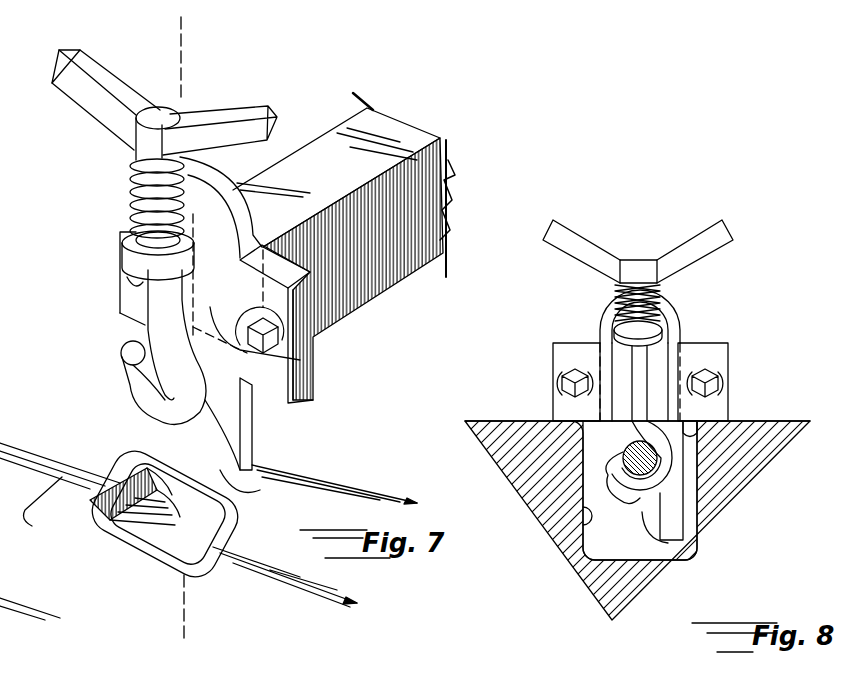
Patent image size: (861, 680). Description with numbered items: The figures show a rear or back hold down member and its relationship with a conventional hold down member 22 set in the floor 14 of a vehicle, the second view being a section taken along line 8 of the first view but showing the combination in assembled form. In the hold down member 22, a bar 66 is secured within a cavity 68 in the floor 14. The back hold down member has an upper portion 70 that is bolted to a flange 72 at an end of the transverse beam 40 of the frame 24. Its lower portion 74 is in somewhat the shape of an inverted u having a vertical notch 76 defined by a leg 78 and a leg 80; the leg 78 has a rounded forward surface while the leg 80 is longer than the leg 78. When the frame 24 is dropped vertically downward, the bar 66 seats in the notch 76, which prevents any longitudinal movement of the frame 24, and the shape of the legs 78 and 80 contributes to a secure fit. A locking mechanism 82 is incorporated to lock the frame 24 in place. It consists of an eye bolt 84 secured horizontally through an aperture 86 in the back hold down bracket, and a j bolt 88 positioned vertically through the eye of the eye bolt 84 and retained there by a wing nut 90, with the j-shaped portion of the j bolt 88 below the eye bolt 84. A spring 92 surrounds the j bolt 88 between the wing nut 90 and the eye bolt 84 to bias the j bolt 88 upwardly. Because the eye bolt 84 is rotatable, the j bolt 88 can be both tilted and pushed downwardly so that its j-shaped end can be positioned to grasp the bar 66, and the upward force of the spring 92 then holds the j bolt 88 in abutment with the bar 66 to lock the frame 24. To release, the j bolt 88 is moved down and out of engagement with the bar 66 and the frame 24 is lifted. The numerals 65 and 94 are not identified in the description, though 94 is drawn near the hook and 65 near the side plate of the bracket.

In FIG. 7, the section line 8— 8 is at (177, 33).
In FIG. 7, the floor 14 is at (178, 531).
In FIG. 8, the floor 14 is at (503, 420).
In FIG. 7, the hold down member 22 is at (102, 536).
In FIG. 8, the hold down member 22 is at (685, 412).
In FIG. 7, the frame 24 is at (397, 104).
In FIG. 7, the transverse beam 40 is at (408, 128).
In FIG. 8, the transverse beam 40 is at (681, 330).
In FIG. 7, the side plate 65 is at (300, 340).
In FIG. 8, the side plate 65 is at (688, 372).
In FIG. 7, the bar 66 is at (130, 522).
In FIG. 8, the bar 66 is at (607, 468).
In FIG. 7, the cavity 68 is at (162, 542).
In FIG. 8, the cavity 68 is at (583, 527).
In FIG. 7, the upper portion 70 is at (290, 389).
In FIG. 8, the upper portion 70 is at (560, 373).
In FIG. 7, the flange 72 is at (308, 362).
In FIG. 8, the flange 72 is at (560, 353).
In FIG. 7, the lower portion 74 is at (240, 423).
In FIG. 8, the lower portion 74 is at (682, 512).
In FIG. 7, the vertical notch 76 is at (268, 465).
In FIG. 8, the vertical notch 76 is at (680, 540).
In FIG. 8, the leg 78 is at (600, 448).
In FIG. 7, the leg 80 is at (238, 472).
In FIG. 8, the leg 80 is at (680, 482).
In FIG. 7, the locking mechanism 82 is at (135, 324).
In FIG. 8, the locking mechanism 82 is at (602, 318).
In FIG. 7, the eye bolt 84 is at (128, 262).
In FIG. 8, the eye bolt 84 is at (665, 325).
In FIG. 7, the aperture 86 is at (127, 247).
In FIG. 7, the j bolt 88 is at (122, 366).
In FIG. 8, the j bolt 88 is at (678, 457).
In FIG. 7, the wing nut 90 is at (127, 128).
In FIG. 8, the wing nut 90 is at (600, 265).
In FIG. 7, the spring 92 is at (132, 174).
In FIG. 8, the spring 92 is at (655, 300).
In FIG. 7, the hook tip 94 is at (133, 377).
In FIG. 8, the hook tip 94 is at (718, 430).